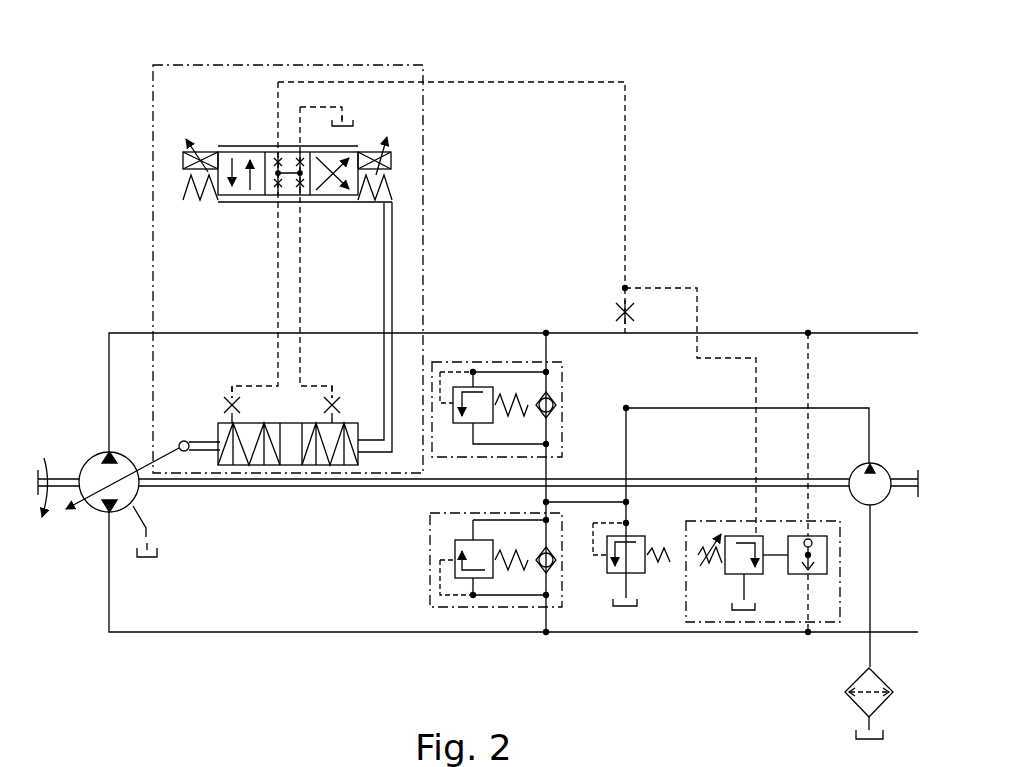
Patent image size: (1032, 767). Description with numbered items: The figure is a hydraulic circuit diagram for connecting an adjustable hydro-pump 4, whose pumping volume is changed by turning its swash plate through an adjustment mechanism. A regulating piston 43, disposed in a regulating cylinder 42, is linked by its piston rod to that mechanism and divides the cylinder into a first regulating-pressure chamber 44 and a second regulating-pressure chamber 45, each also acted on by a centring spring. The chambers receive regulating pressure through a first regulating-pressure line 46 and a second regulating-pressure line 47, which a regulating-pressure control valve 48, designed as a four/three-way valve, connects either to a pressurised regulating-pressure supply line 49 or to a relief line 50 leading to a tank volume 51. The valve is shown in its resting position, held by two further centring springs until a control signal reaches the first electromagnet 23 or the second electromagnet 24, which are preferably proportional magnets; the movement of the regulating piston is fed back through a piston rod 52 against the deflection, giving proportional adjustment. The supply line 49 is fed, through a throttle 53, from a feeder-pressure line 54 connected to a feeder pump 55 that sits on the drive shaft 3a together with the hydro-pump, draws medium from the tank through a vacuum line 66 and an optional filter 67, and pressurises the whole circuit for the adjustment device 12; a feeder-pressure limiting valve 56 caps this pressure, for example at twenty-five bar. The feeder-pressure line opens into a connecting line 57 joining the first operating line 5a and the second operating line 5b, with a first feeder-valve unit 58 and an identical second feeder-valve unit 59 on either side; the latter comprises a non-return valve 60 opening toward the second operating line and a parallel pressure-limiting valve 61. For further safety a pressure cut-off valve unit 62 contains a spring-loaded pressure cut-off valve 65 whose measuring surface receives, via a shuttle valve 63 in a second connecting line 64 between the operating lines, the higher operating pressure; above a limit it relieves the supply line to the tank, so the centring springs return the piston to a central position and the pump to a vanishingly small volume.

The adjustment device 12 is at (153, 92).
The first electromagnet 23 is at (205, 158).
The second electromagnet 24 is at (391, 164).
The drive shaft 3a is at (61, 476).
The hydro-pump 4 is at (97, 505).
The first operating line 5a is at (109, 352).
The second operating line 5b is at (250, 632).
The regulating cylinder 42 is at (256, 405).
The regulating piston 43 is at (291, 465).
The first regulating-pressure chamber 44 is at (255, 465).
The second regulating-pressure chamber 45 is at (344, 465).
The first regulating-pressure line 46 is at (278, 266).
The second regulating-pressure line 47 is at (300, 266).
The regulating-pressure control valve 48 is at (258, 140).
The regulating-pressure supply line 49 is at (626, 147).
The relief line 50 is at (313, 105).
The tank volume 51 is at (353, 118).
The piston rod 52 is at (392, 238).
The throttle 53 is at (621, 306).
The feeder-pressure line 54 is at (660, 408).
The feeder pump 55 is at (882, 478).
The feeder-pressure limiting valve 56 is at (638, 565).
The connecting line 57 is at (546, 467).
The first feeder-valve unit 58 is at (492, 362).
The second feeder-valve unit 59 is at (495, 607).
The non-return valve 60 is at (552, 566).
The pressure-limiting valve 61 is at (440, 567).
The pressure cut-off valve unit 62 is at (697, 521).
The shuttle valve 63 is at (824, 563).
The second connecting line 64 is at (804, 604).
The pressure cut-off valve 65 is at (732, 575).
The vacuum line 66 is at (872, 600).
The filter 67 is at (852, 707).